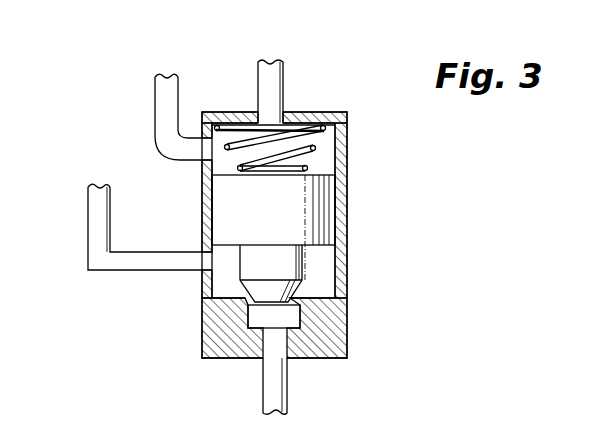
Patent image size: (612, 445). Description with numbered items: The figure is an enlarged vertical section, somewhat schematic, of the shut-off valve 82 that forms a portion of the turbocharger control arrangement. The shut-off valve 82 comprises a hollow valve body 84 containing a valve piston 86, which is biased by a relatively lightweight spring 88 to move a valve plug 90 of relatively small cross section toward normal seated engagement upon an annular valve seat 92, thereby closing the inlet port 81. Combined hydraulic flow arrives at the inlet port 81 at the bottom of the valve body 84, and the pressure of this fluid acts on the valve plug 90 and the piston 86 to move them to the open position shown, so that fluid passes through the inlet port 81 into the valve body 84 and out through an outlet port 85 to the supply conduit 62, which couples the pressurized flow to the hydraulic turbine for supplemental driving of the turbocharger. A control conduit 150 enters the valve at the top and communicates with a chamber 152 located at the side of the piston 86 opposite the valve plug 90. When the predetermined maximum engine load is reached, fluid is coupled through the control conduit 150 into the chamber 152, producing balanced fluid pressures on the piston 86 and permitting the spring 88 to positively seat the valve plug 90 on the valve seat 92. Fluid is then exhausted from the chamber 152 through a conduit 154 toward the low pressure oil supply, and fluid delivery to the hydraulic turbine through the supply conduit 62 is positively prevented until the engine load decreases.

The supply conduit 62 is at (124, 257).
The inlet port 81 is at (274, 388).
The shut-off valve 82 is at (404, 240).
The valve body 84 is at (340, 211).
The outlet port 85 is at (212, 260).
The valve piston 86 is at (216, 207).
The spring 88 is at (335, 148).
The valve plug 90 is at (336, 270).
The valve seat 92 is at (248, 318).
The control conduit 150 is at (258, 70).
The chamber 152 is at (288, 146).
The conduit 154 is at (156, 120).